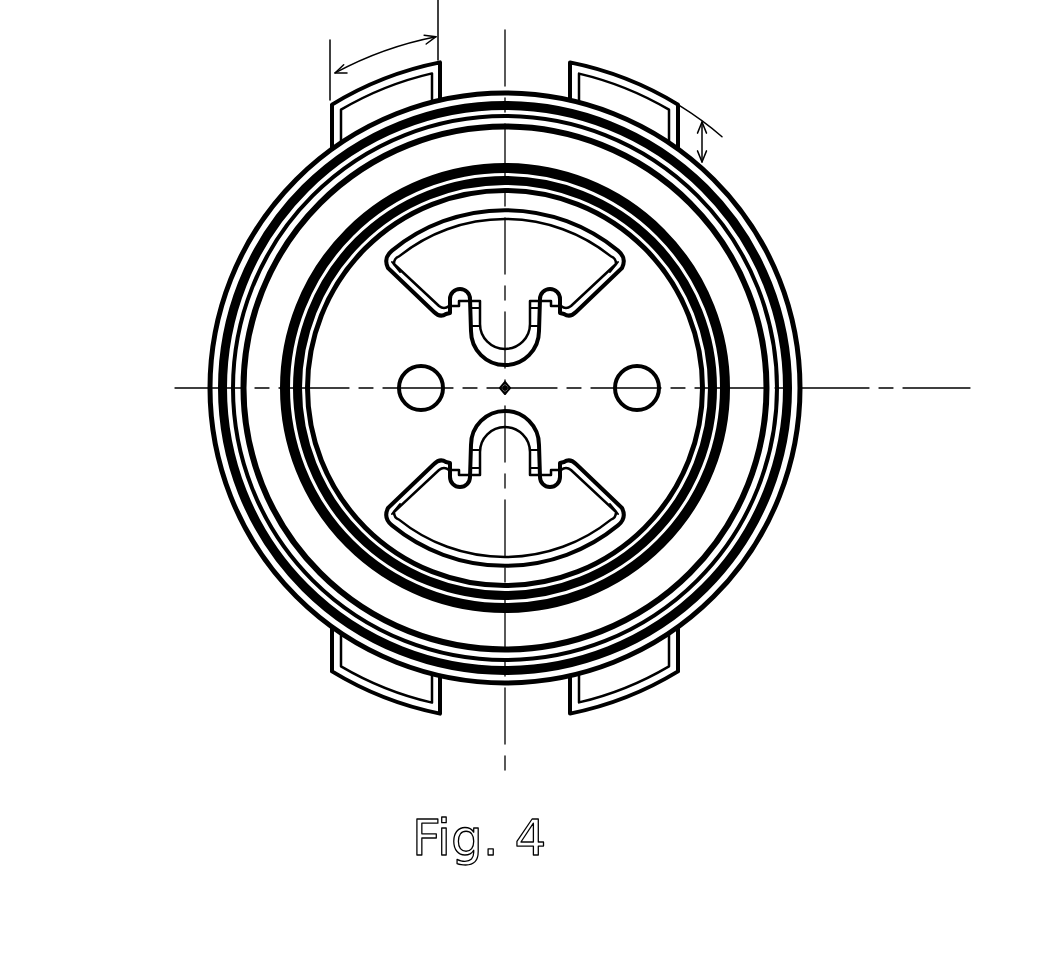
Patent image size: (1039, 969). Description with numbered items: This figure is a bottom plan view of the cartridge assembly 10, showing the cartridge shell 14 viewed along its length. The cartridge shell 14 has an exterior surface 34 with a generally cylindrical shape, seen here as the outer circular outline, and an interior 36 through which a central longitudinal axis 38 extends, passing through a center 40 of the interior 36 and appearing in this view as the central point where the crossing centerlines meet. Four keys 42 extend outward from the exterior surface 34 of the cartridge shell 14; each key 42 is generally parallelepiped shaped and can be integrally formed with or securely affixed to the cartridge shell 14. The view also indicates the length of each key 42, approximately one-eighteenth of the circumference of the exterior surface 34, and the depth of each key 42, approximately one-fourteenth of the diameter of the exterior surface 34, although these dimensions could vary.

The cartridge assembly 10 is at (521, 387).
The cartridge shell 14 is at (440, 388).
The exterior surface 34 is at (212, 440).
The interior 36 is at (627, 325).
The central longitudinal axis 38 is at (713, 448).
The center 40 is at (508, 391).
The keys 42 is at (332, 107).